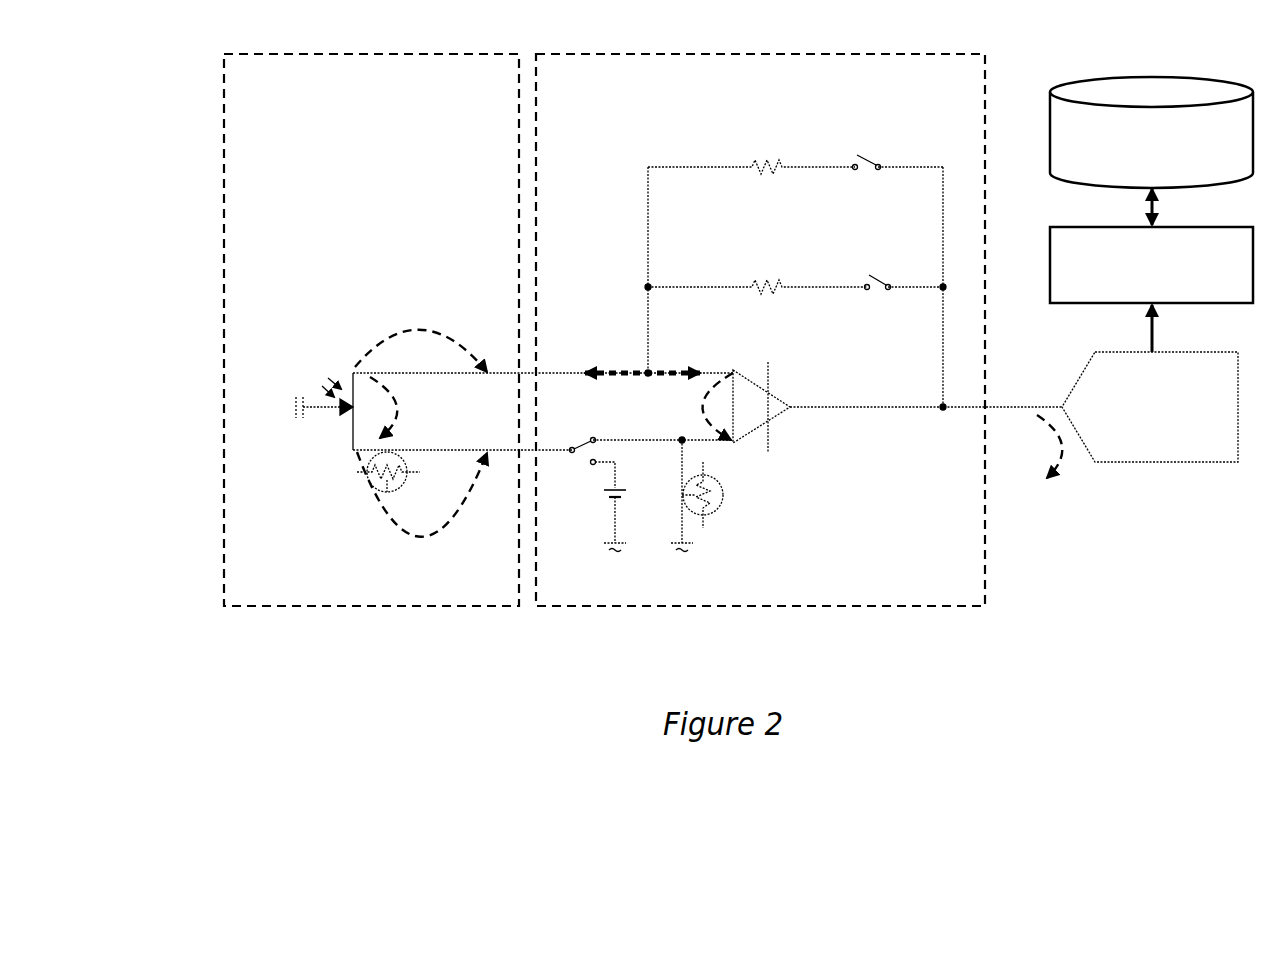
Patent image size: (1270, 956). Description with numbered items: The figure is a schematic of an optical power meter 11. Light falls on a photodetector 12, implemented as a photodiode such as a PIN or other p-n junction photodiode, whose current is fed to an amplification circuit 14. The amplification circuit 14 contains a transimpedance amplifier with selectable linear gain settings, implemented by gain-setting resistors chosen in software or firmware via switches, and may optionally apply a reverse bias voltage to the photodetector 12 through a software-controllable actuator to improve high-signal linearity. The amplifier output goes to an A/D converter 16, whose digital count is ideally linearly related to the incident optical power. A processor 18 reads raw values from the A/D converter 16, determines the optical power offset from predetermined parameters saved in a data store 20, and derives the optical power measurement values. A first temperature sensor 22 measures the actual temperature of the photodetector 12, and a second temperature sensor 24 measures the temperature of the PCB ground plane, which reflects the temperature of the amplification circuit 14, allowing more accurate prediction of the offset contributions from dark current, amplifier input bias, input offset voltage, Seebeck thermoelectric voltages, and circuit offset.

The optical power meter 11 is at (700, 381).
The photodetector 12 is at (359, 121).
The amplification circuit 14 is at (748, 121).
The A/D converter 16 is at (1145, 438).
The processor 18 is at (1139, 292).
The data store 20 is at (1139, 172).
The first temperature sensor 22 is at (363, 487).
The second temperature sensor 24 is at (715, 512).